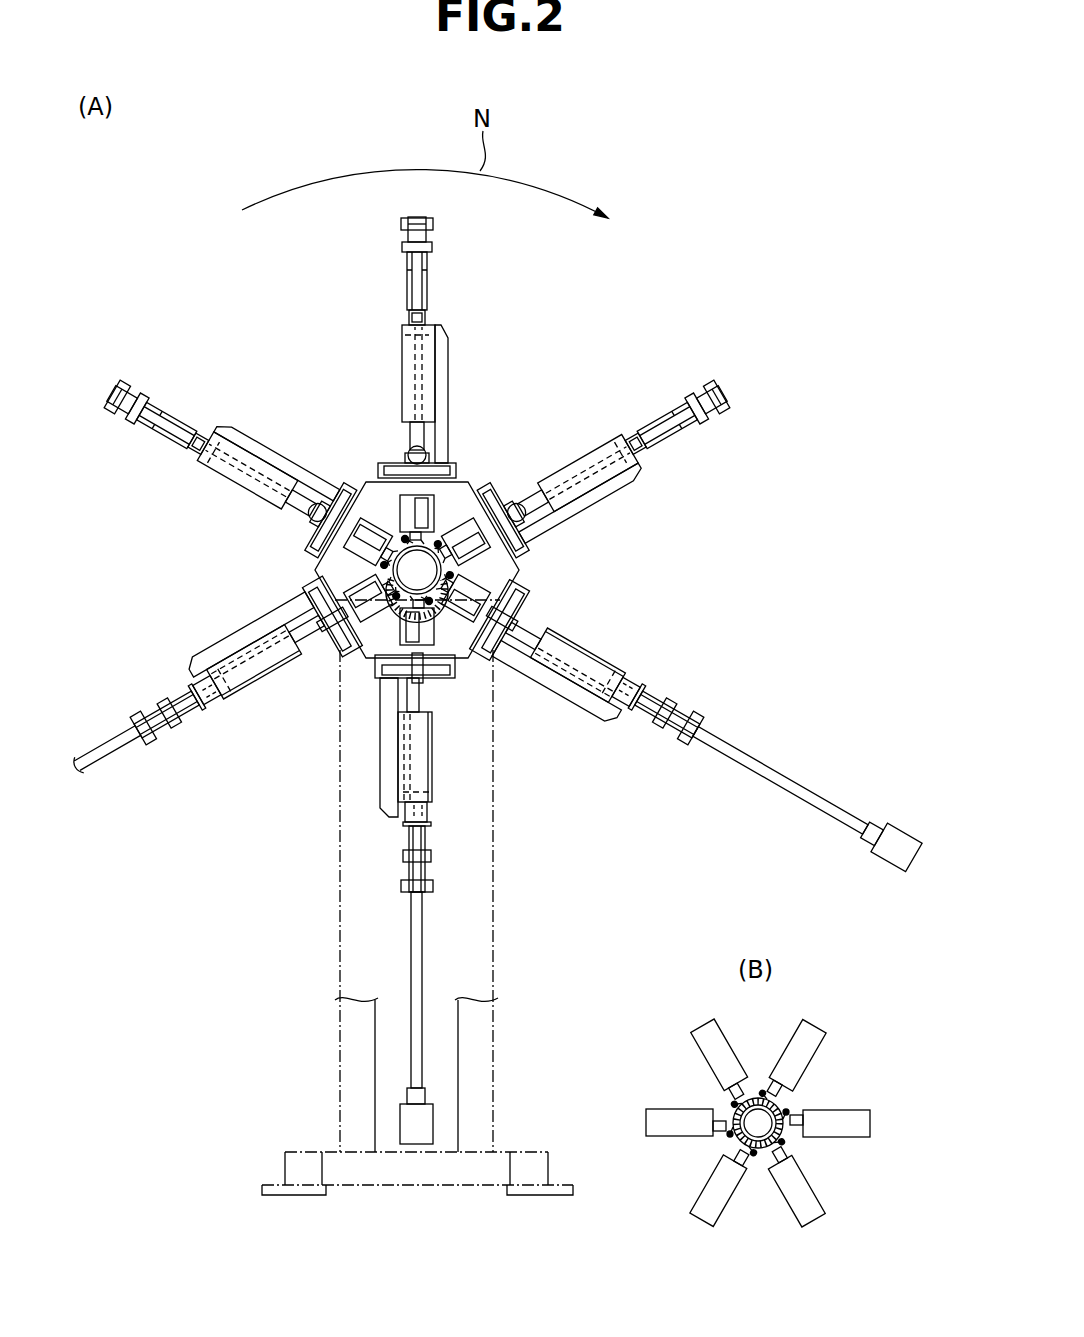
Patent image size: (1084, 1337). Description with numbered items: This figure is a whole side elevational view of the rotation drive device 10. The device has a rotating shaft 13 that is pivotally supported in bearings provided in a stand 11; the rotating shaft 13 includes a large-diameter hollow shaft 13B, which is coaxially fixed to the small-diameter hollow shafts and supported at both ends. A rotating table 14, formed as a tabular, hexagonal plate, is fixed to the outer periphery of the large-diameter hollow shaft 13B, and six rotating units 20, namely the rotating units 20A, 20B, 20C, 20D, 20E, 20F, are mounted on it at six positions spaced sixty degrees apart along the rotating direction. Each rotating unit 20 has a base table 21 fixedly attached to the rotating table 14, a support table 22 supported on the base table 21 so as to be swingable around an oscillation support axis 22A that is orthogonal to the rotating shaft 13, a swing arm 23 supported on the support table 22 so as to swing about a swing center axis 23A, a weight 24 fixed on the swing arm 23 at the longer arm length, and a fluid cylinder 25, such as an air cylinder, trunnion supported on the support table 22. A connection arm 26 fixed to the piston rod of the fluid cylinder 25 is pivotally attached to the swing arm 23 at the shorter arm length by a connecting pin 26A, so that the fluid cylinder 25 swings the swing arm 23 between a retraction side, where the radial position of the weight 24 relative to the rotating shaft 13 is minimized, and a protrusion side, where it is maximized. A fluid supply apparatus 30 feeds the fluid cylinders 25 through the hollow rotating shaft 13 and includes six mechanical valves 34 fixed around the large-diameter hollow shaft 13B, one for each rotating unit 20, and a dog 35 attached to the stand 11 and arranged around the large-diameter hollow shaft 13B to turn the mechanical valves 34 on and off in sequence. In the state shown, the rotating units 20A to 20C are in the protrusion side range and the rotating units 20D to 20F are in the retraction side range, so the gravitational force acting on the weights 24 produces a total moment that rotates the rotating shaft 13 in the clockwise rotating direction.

The rotation drive device 10 is at (237, 318).
The stand 11 is at (340, 852).
The rotating shaft 13 is at (448, 566).
The large-diameter hollow shaft 13B is at (450, 586).
The rotating table 14 is at (380, 638).
The rotating unit 20 is at (393, 318).
The rotating unit 20A is at (396, 346).
The rotating unit 20B is at (598, 434).
The rotating unit 20C is at (641, 645).
The rotating unit 20D is at (393, 921).
The rotating unit 20E is at (215, 632).
The rotating unit 20F is at (248, 422).
The base table 21 is at (478, 653).
The support table 22 is at (560, 687).
The oscillation support axis 22A is at (520, 626).
The swing arm 23 is at (816, 790).
The swing center axis 23A is at (700, 713).
The weight 24 is at (900, 826).
The fluid cylinder 25 is at (603, 658).
The connection arm 26 is at (680, 727).
The connecting pin 26A is at (668, 698).
The fluid supply apparatus 30 is at (450, 502).
The mechanical valve 34 is at (445, 600).
The dog 35 is at (395, 536).